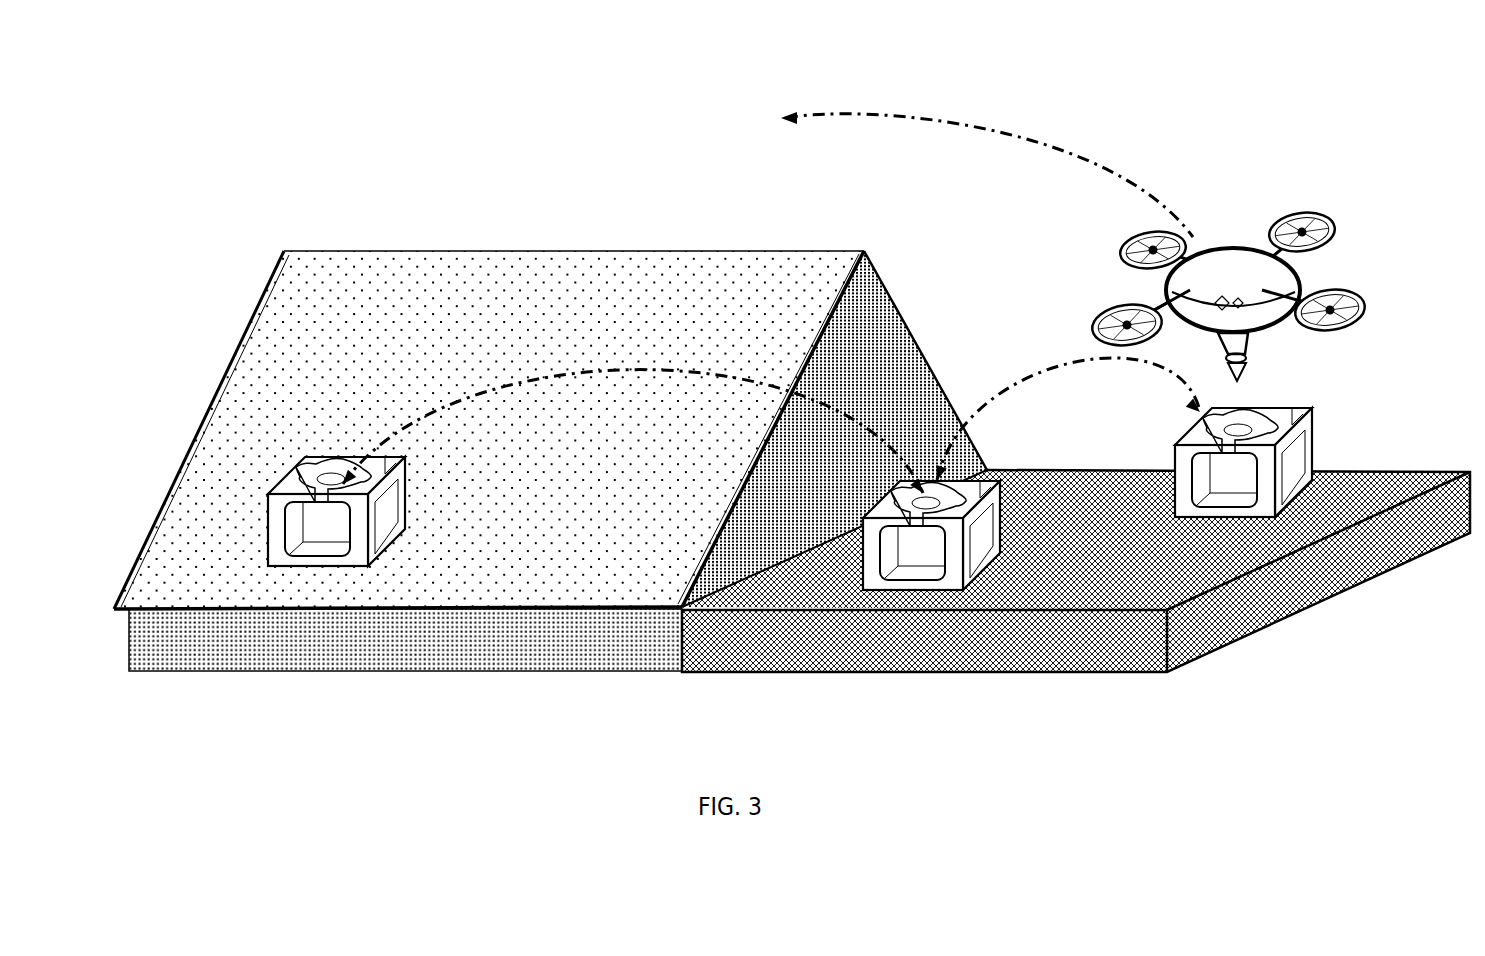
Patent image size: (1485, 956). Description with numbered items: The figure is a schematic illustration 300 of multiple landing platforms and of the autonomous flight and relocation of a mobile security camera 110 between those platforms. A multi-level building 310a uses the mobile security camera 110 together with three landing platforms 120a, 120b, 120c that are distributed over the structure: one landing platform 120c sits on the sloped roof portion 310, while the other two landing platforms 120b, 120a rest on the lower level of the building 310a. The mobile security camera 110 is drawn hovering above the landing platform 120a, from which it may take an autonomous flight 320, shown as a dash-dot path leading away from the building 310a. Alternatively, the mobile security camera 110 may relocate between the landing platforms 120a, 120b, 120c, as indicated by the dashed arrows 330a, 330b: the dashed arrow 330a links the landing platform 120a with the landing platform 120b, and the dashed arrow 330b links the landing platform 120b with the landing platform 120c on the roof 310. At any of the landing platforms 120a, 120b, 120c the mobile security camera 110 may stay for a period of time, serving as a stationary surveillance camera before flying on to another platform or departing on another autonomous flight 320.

The schematic illustration 300 is at (1428, 122).
The mobile security camera 110 is at (1248, 245).
The building roof 310 is at (470, 250).
The multi-level building 310a is at (1058, 468).
The autonomous flight 320 is at (900, 115).
The dashed arrow 330a is at (1025, 362).
The dashed arrow 330b is at (669, 367).
The landing platform 120a is at (1343, 410).
The landing platform 120b is at (913, 592).
The landing platform 120c is at (266, 516).